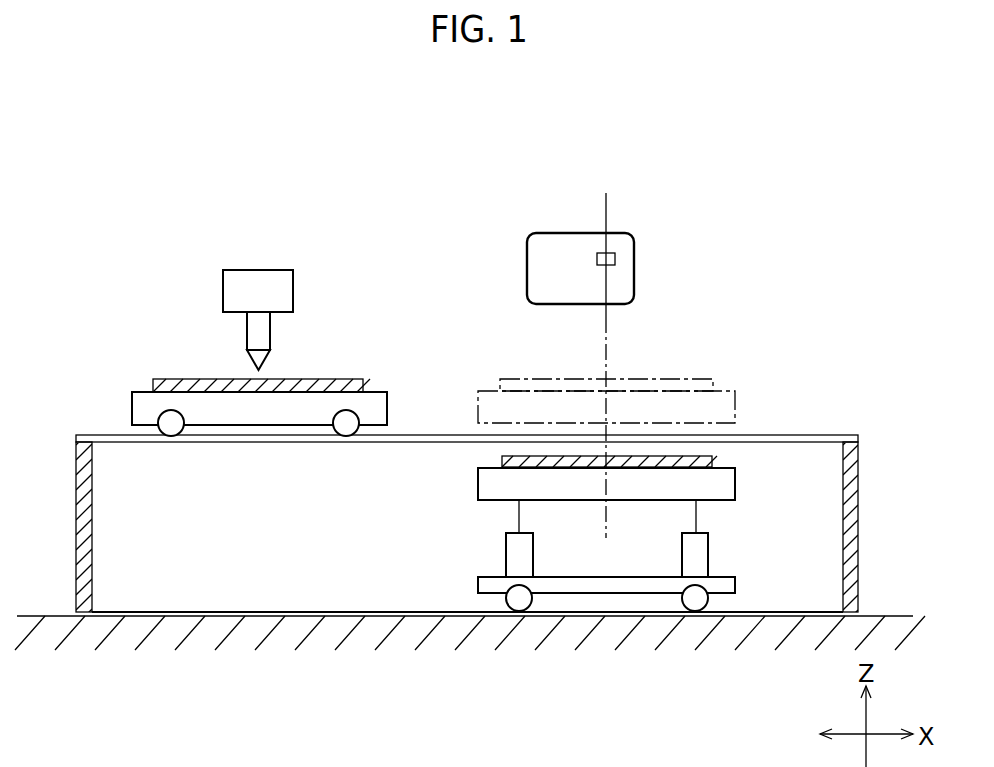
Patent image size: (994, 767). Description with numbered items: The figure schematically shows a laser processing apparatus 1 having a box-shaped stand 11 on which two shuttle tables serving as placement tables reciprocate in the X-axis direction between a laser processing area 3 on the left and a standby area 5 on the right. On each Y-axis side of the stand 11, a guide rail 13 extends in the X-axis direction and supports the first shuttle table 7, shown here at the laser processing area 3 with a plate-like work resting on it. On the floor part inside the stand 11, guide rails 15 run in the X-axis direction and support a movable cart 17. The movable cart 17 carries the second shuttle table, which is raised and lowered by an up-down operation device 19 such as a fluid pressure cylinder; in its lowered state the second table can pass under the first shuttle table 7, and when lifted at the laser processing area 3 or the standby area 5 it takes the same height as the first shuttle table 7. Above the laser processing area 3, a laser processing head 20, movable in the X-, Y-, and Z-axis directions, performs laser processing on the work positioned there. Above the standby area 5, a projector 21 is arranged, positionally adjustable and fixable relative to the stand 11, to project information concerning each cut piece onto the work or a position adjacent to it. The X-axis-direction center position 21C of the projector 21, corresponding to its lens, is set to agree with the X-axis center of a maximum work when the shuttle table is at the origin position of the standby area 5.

The laser processing apparatus 1 is at (862, 396).
The laser processing area 3 is at (349, 323).
The standby area 5 is at (752, 322).
The first shuttle table 7 is at (387, 409).
The stand 11 is at (858, 530).
The guide rail 13 is at (100, 435).
The guide rails 15 is at (224, 612).
The movable cart 17 is at (735, 585).
The up-down operation device 19 is at (708, 557).
The laser processing head 20 is at (262, 269).
The projector 21 is at (635, 255).
The X-axis-direction center position of the projector 21C is at (615, 253).